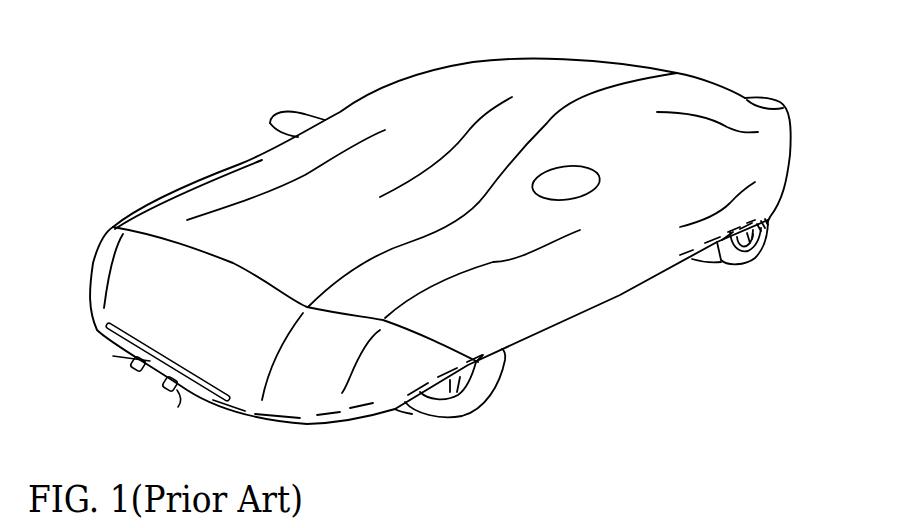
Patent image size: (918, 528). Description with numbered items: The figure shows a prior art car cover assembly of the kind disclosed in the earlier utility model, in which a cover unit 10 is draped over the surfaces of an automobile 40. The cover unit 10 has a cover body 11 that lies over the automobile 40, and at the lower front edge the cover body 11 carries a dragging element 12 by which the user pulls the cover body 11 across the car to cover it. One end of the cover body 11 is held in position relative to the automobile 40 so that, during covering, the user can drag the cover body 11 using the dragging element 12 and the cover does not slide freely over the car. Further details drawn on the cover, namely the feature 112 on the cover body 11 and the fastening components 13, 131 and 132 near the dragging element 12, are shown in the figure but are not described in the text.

The cover unit 10 is at (326, 60).
The cover body 11 is at (375, 122).
The opening 112 is at (568, 183).
The dragging element 12 is at (218, 399).
The fastening assembly 13 is at (90, 392).
The hook strap 131 is at (721, 262).
The buckle 132 is at (133, 370).
The automobile 40 is at (560, 288).